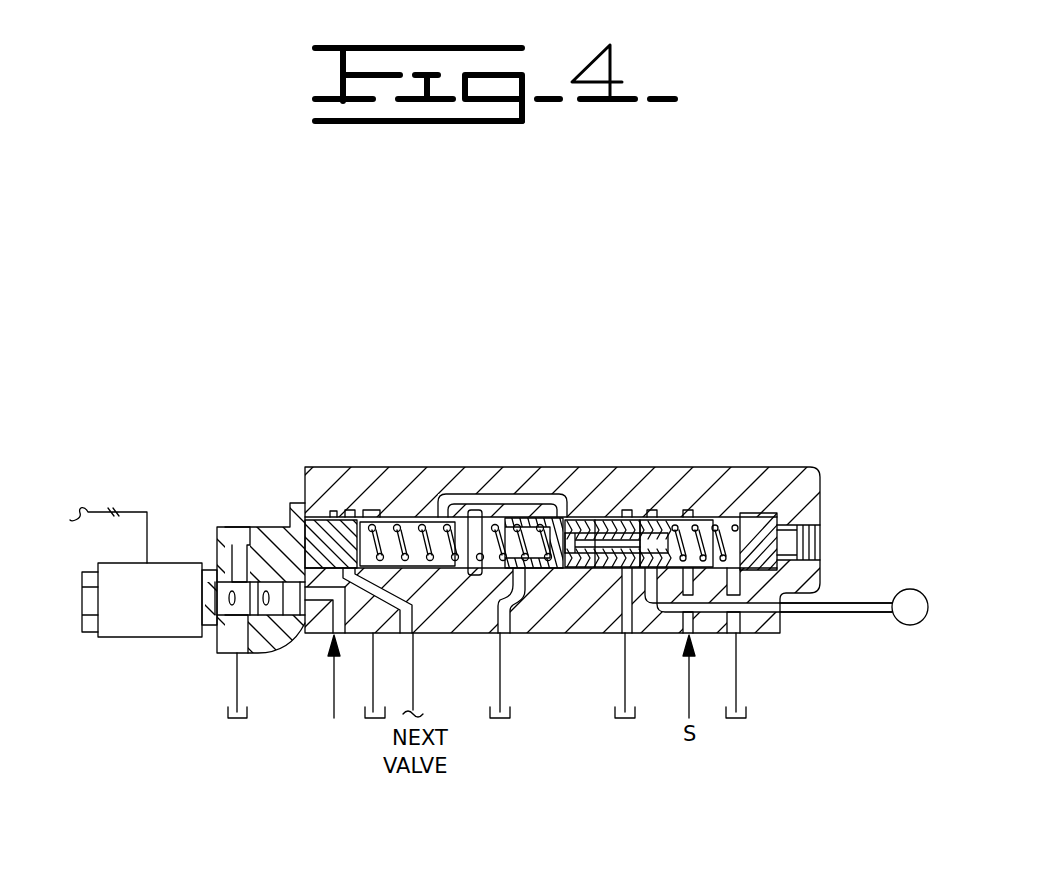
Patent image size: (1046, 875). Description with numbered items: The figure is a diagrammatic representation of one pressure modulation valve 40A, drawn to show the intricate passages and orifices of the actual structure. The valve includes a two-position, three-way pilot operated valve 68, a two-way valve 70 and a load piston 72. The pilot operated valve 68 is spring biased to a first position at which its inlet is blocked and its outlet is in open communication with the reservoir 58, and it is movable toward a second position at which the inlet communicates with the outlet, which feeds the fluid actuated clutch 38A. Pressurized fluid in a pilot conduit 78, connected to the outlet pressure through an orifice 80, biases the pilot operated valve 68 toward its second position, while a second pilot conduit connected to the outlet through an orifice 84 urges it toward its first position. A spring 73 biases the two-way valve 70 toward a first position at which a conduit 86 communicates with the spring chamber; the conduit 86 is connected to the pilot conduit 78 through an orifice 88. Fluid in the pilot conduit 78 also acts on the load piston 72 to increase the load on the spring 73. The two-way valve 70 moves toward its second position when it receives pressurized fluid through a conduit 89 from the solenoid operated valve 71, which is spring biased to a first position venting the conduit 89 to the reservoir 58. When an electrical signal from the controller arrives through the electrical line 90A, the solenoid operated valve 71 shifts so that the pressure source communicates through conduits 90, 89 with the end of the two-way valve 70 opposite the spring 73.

The pressure modulation valve 40A is at (810, 505).
The electrical line 90A is at (88, 512).
The conduit 89 is at (272, 527).
The solenoid operated valve 71 is at (240, 587).
The two-position, two-way solenoid operated valve 70 is at (317, 517).
The spring 73 is at (403, 527).
The conduit 86 is at (438, 497).
The orifice 88 is at (470, 523).
The load piston 72 is at (573, 520).
The orifice 80 is at (630, 517).
The orifice 84 is at (707, 517).
The conduit 90 is at (334, 660).
The pilot conduit 78 is at (566, 568).
The two-position, three-way pilot operated valve 68 is at (603, 568).
The fluid actuated clutch 38A is at (889, 620).
The reservoir 58 is at (247, 712).